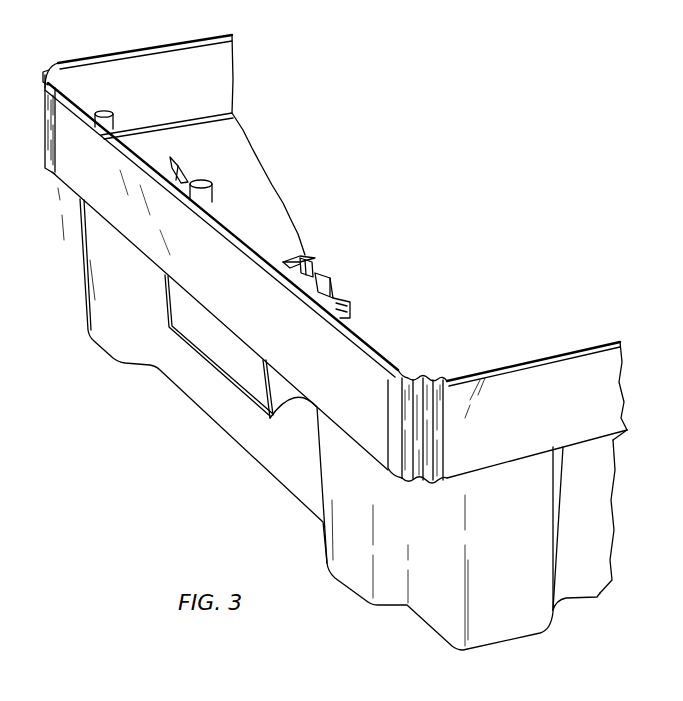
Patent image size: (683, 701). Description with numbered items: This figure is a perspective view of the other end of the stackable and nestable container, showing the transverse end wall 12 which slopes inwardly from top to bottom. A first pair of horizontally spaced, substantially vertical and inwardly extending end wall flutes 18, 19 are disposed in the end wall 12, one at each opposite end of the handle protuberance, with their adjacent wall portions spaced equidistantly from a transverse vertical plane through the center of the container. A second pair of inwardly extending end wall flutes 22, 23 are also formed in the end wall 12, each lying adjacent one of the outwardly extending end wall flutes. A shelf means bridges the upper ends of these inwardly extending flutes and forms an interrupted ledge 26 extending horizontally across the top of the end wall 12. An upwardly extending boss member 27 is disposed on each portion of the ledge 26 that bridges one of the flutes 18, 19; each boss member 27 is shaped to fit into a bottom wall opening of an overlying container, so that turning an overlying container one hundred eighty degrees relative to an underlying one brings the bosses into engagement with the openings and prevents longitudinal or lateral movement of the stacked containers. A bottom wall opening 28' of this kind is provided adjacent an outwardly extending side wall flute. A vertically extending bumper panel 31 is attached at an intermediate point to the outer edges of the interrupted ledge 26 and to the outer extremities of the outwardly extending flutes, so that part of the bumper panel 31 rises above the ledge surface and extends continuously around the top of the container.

The end wall 12 is at (205, 342).
The inwardly extending end wall flute 18 is at (336, 290).
The inwardly extending end wall flute 19 is at (194, 188).
The inwardly extending end wall flute 22 is at (418, 360).
The inwardly extending end wall flute 23 is at (108, 112).
The interrupted ledge 26 is at (314, 269).
The boss member 27 is at (180, 162).
The bottom wall opening 28' is at (318, 253).
The bumper panel 31 is at (110, 194).